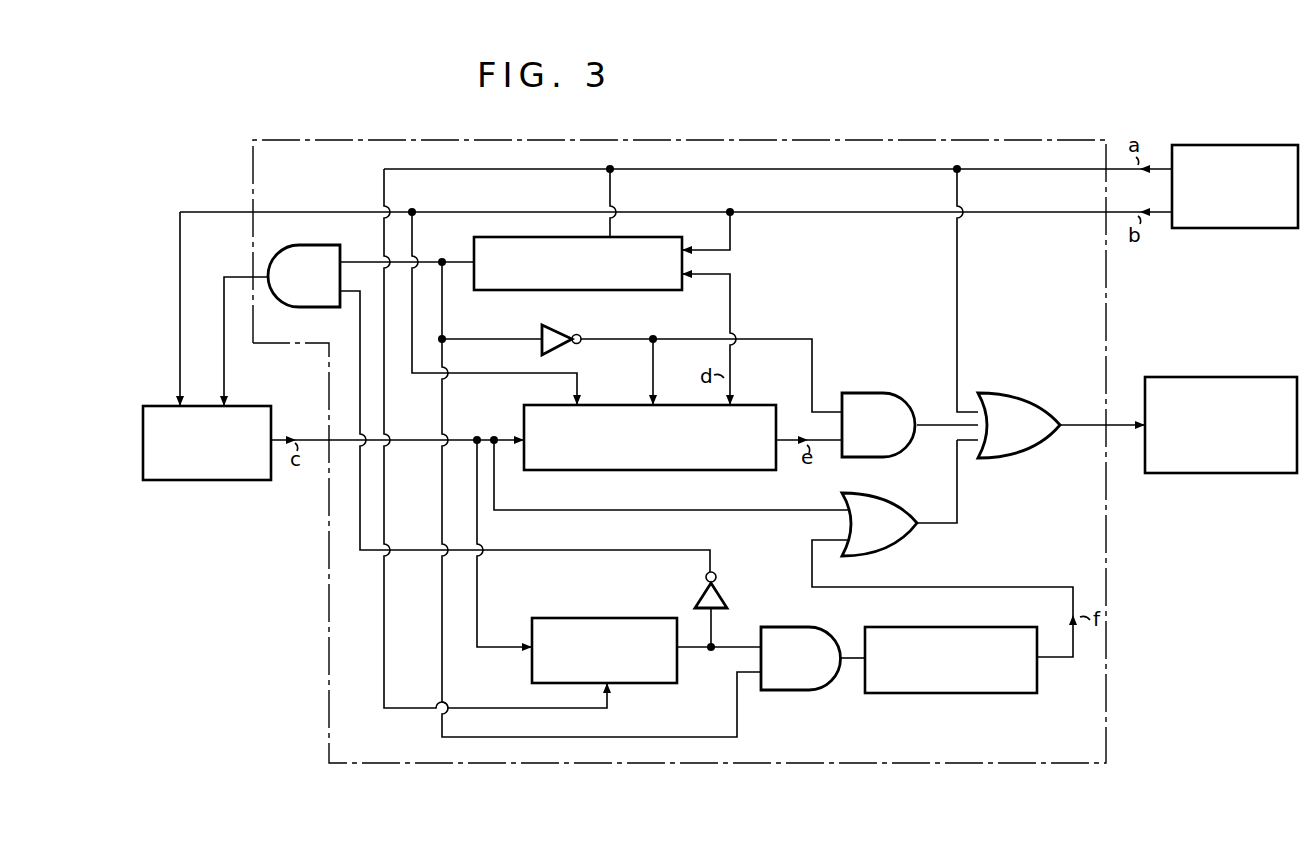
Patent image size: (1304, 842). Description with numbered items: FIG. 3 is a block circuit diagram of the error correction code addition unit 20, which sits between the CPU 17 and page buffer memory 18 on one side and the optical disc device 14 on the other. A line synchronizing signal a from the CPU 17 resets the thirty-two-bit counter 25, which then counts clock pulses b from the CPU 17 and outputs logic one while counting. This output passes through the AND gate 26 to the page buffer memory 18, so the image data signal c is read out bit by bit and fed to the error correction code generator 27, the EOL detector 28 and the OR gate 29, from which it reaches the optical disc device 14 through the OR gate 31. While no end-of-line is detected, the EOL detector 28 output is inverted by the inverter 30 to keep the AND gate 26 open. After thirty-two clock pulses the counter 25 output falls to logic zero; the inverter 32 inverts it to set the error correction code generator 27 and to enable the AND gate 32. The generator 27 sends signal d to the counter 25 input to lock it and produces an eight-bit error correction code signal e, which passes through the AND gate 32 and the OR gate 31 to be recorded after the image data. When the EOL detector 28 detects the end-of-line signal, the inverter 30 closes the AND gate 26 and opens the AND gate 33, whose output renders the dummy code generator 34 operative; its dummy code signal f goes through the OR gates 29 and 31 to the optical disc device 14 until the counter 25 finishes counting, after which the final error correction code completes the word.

The optical disc device 14 is at (1223, 377).
The CPU 17 is at (1225, 145).
The page buffer memory 18 is at (190, 481).
The error correction code addition unit 20 is at (880, 140).
The 32-bit counter 25 is at (503, 292).
The AND gate 26 is at (304, 245).
The error correction code generator 27 is at (768, 405).
The EOL detector 28 is at (603, 618).
The OR gate 29 is at (880, 557).
The inverter 30 is at (726, 592).
The OR gate 31 is at (1008, 393).
The inverter and AND gate 32 is at (560, 330).
The AND gate 33 is at (795, 692).
The dummy code generator 34 is at (945, 693).